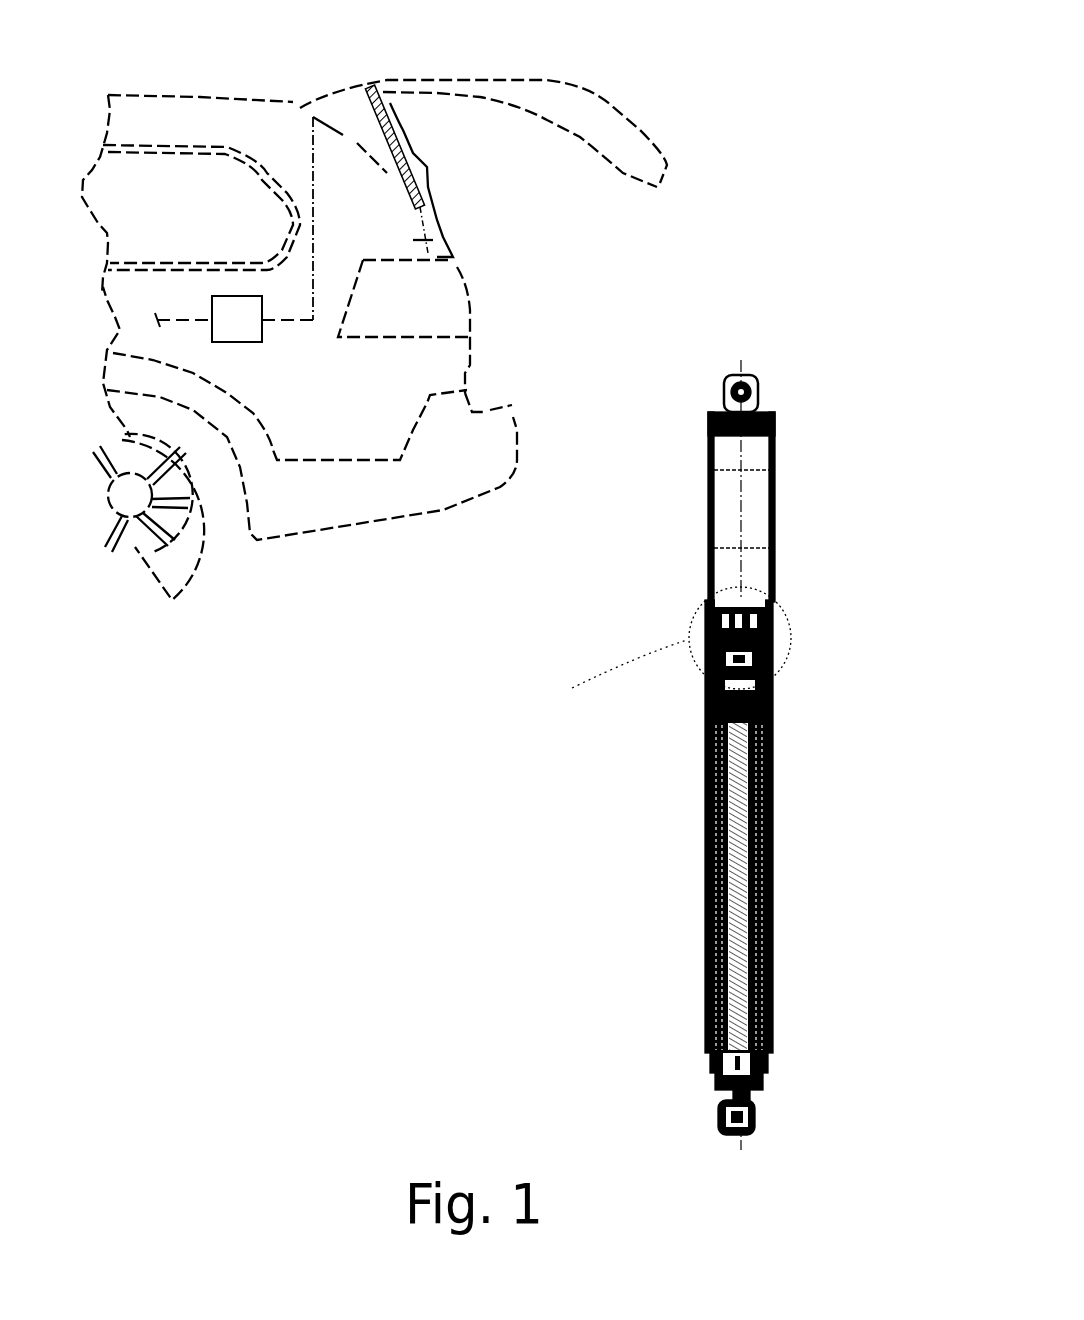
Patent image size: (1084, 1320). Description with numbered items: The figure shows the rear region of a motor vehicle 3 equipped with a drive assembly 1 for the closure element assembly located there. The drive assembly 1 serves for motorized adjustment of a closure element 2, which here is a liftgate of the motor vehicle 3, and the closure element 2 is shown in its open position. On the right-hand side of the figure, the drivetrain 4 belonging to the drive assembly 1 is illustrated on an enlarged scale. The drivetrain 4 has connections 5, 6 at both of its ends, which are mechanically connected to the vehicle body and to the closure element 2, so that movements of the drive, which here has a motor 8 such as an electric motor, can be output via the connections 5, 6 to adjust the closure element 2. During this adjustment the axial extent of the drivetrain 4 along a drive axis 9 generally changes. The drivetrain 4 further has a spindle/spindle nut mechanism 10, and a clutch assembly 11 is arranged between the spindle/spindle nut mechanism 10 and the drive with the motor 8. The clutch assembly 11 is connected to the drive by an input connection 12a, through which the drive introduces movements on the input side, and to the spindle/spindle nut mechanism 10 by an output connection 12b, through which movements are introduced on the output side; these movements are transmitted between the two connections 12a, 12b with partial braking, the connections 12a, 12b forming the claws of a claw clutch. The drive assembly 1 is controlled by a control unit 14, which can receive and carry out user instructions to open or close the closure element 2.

The drive assembly 1 is at (706, 447).
The closure element 2 is at (578, 102).
The motor vehicle 3 is at (155, 112).
The drivetrain 4 is at (730, 749).
The connection 5 is at (758, 378).
The connection 6 is at (768, 1151).
The motor 8 is at (752, 490).
The drive axis 9 is at (739, 354).
The spindle/spindle nut mechanism 10 is at (677, 705).
The clutch assembly 11 is at (750, 632).
The input connection 12a is at (772, 615).
The output connection 12b is at (772, 660).
The control unit 14 is at (240, 330).